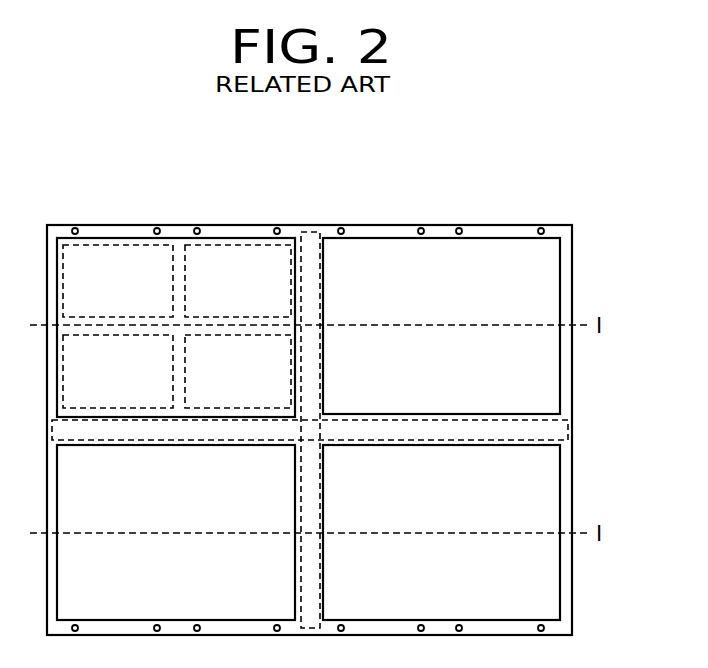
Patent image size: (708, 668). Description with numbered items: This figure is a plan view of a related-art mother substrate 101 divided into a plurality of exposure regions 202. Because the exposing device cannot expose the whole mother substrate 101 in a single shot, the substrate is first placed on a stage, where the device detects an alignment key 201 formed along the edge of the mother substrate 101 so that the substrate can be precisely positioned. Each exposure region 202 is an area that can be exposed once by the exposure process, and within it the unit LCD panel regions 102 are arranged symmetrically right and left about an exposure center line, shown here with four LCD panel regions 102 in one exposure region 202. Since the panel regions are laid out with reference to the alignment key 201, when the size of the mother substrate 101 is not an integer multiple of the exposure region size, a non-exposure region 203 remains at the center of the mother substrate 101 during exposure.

The mother substrate 101 is at (567, 384).
The unit LCD panel region 102 is at (104, 248).
The alignment key 201 is at (542, 227).
The exposure region 202 is at (545, 278).
The non-exposure region 203 is at (560, 431).